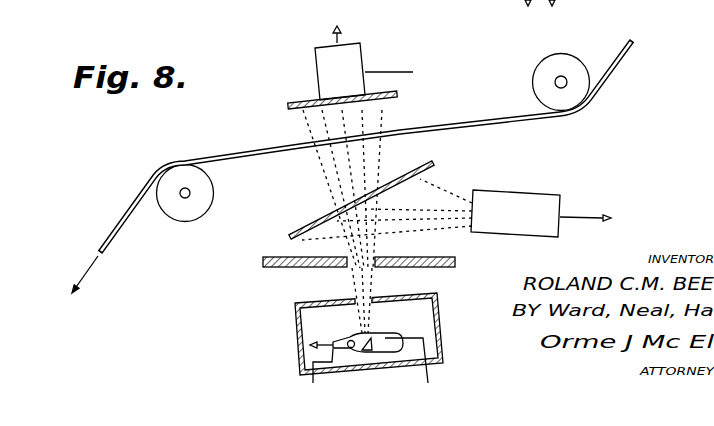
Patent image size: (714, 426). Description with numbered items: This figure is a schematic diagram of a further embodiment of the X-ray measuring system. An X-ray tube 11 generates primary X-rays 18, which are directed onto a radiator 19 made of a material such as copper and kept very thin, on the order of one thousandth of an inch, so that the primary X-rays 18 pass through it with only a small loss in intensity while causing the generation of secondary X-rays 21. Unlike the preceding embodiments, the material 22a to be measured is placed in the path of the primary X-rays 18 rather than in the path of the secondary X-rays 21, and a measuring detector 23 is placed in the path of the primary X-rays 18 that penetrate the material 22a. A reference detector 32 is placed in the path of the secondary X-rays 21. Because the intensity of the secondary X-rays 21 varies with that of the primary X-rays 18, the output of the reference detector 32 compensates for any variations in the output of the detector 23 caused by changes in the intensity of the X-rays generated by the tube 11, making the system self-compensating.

The X-ray tube 11 is at (377, 333).
The primary X-rays 18 is at (320, 170).
The radiator 19 is at (430, 163).
The secondary X-rays 21 is at (443, 183).
The material to be measured 22a is at (443, 126).
The measuring detector 23 is at (323, 65).
The reference detector 32 is at (517, 190).